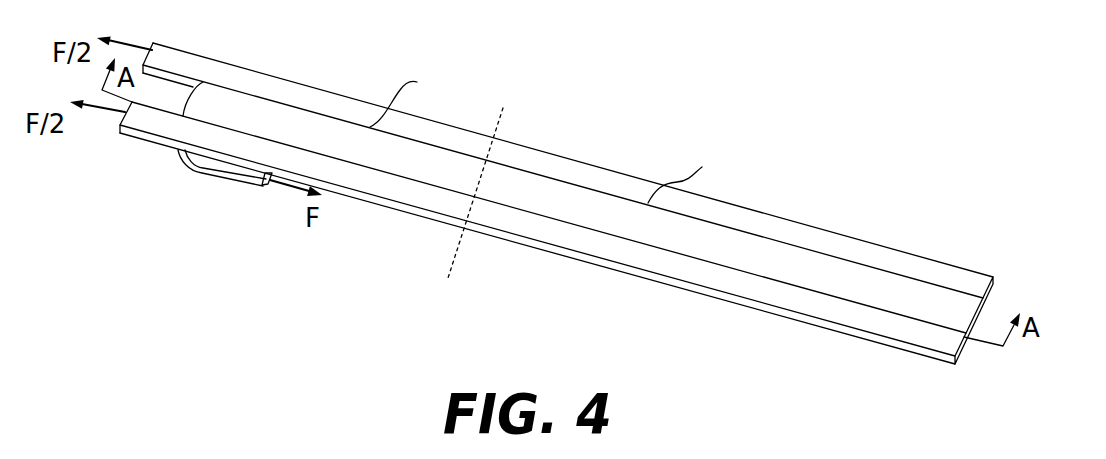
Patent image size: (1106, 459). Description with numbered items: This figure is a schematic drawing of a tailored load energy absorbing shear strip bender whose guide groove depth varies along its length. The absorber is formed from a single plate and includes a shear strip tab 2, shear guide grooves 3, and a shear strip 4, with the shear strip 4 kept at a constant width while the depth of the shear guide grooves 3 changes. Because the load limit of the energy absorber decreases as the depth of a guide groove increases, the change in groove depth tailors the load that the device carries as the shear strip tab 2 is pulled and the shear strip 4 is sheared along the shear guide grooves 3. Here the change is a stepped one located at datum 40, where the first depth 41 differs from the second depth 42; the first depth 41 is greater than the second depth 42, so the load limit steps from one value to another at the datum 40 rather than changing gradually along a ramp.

The shear strip tab 2 is at (215, 172).
The shear guide grooves 3 is at (930, 285).
The shear strip 4 is at (893, 288).
The datum 40 is at (466, 208).
The first depth 41 is at (388, 170).
The second depth 42 is at (663, 248).